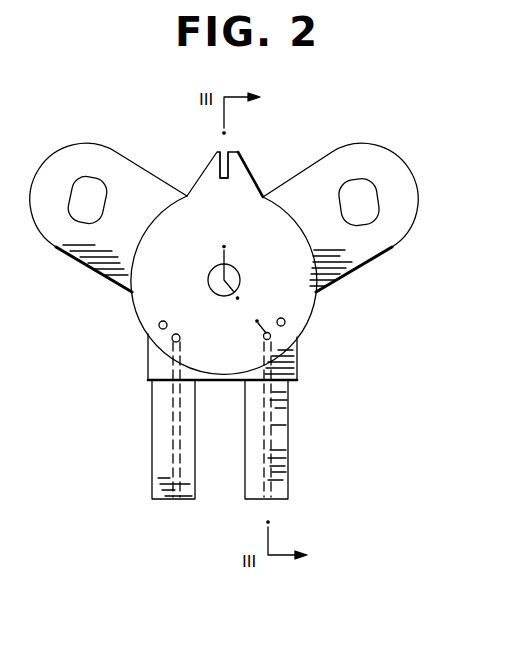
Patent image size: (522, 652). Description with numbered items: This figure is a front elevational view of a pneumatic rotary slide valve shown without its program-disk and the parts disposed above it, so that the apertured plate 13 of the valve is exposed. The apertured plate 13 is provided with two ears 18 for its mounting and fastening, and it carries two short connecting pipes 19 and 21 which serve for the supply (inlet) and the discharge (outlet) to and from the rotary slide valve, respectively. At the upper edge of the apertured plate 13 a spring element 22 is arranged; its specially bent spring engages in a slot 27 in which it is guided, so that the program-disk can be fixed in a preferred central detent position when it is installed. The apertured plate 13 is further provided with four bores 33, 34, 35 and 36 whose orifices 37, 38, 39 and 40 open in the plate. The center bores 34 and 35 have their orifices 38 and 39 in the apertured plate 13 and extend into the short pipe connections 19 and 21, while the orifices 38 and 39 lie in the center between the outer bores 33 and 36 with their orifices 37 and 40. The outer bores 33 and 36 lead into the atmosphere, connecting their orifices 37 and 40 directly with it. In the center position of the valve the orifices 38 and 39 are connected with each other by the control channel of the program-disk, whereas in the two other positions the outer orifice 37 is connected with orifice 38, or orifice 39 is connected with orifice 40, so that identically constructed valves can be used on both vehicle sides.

The apertured plate 13 is at (143, 302).
The ears 18 is at (78, 262).
The connecting pipe 19 is at (158, 480).
The connecting pipe 21 is at (288, 487).
The spring element 22 is at (245, 152).
The slot 27 is at (214, 162).
The bore 33 is at (125, 332).
The orifice 37 is at (159, 325).
The bore 36 is at (319, 328).
The orifice 40 is at (285, 322).
The center bore 34 is at (172, 428).
The center bore 35 is at (277, 433).
The orifice 38 is at (180, 338).
The orifice 39 is at (264, 338).